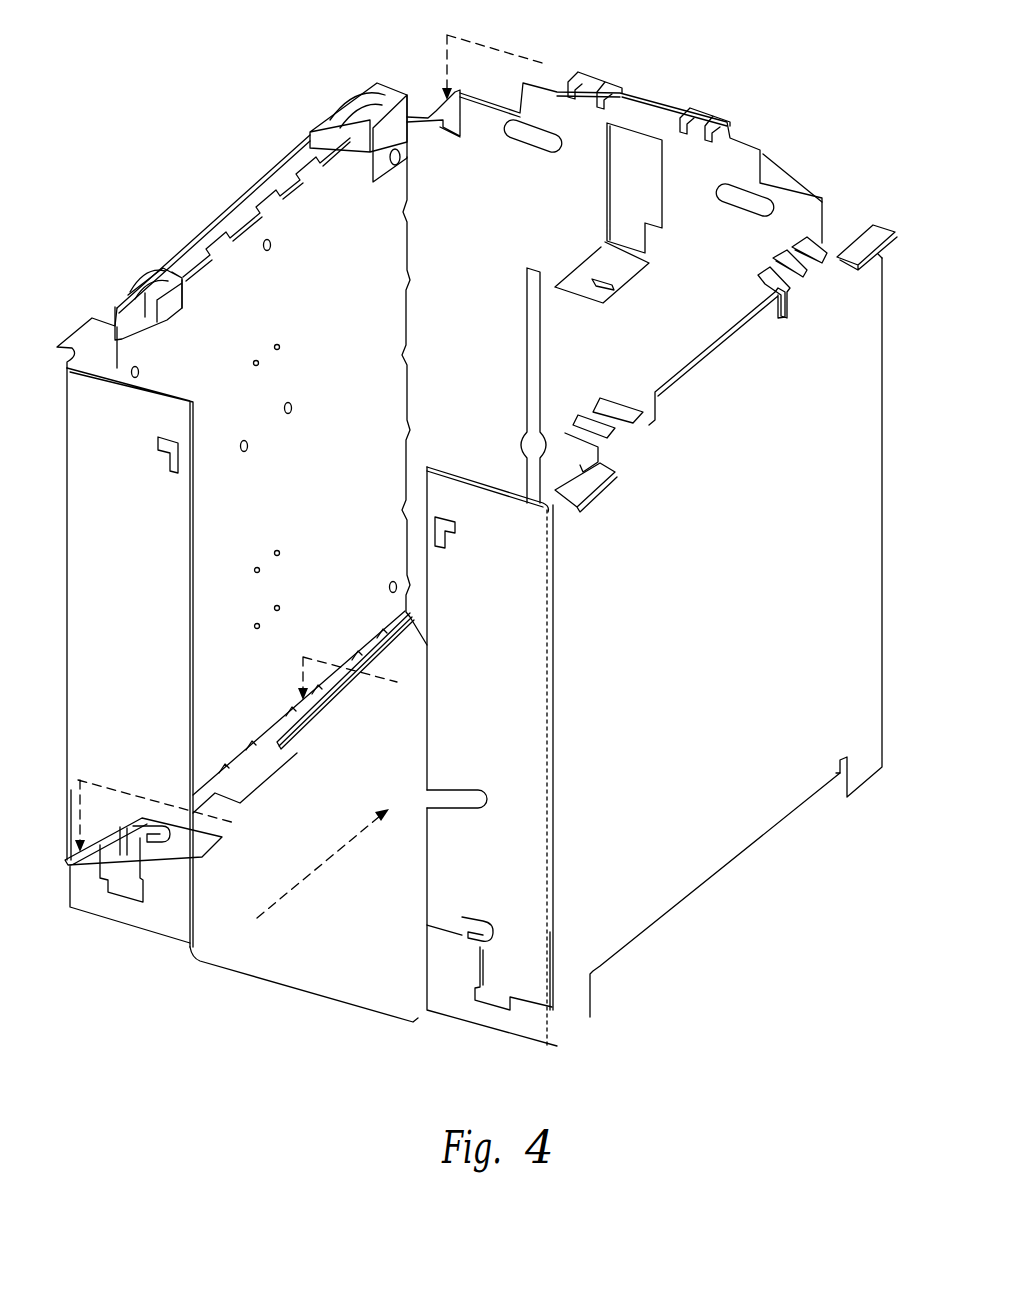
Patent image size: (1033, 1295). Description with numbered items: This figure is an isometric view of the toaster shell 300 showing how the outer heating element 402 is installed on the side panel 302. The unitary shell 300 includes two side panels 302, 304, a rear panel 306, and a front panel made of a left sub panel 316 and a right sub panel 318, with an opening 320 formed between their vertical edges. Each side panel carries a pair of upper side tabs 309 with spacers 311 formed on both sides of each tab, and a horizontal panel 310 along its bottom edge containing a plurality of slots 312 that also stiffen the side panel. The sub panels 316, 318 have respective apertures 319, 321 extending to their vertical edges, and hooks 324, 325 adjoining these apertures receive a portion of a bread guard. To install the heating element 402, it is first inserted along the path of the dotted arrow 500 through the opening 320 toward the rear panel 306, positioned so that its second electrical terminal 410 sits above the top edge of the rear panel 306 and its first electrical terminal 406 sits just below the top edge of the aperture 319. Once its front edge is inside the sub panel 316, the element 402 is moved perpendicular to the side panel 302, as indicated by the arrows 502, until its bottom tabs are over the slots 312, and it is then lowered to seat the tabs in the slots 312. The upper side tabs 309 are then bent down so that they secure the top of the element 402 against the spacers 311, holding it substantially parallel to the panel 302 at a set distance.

The toaster shell 300 is at (473, 537).
The side panel 302 is at (213, 223).
The side panel 304 is at (720, 763).
The rear panel 306 is at (648, 102).
The upper side tabs 309 is at (318, 112).
The horizontal panel 310 is at (282, 745).
The spacers 311 is at (182, 282).
The slots 312 is at (314, 709).
The left sub panel 316 is at (100, 418).
The right sub panel 318 is at (528, 865).
The aperture 319 is at (127, 874).
The opening 320 is at (297, 990).
The aperture 321 is at (501, 979).
The hook 324 is at (152, 845).
The hook 325 is at (488, 938).
The outer heating element 402 is at (387, 240).
The first electrical terminal 406 is at (66, 868).
The second electrical terminal 410 is at (443, 103).
The dotted arrow 500 is at (366, 838).
The arrows 502 is at (488, 50).